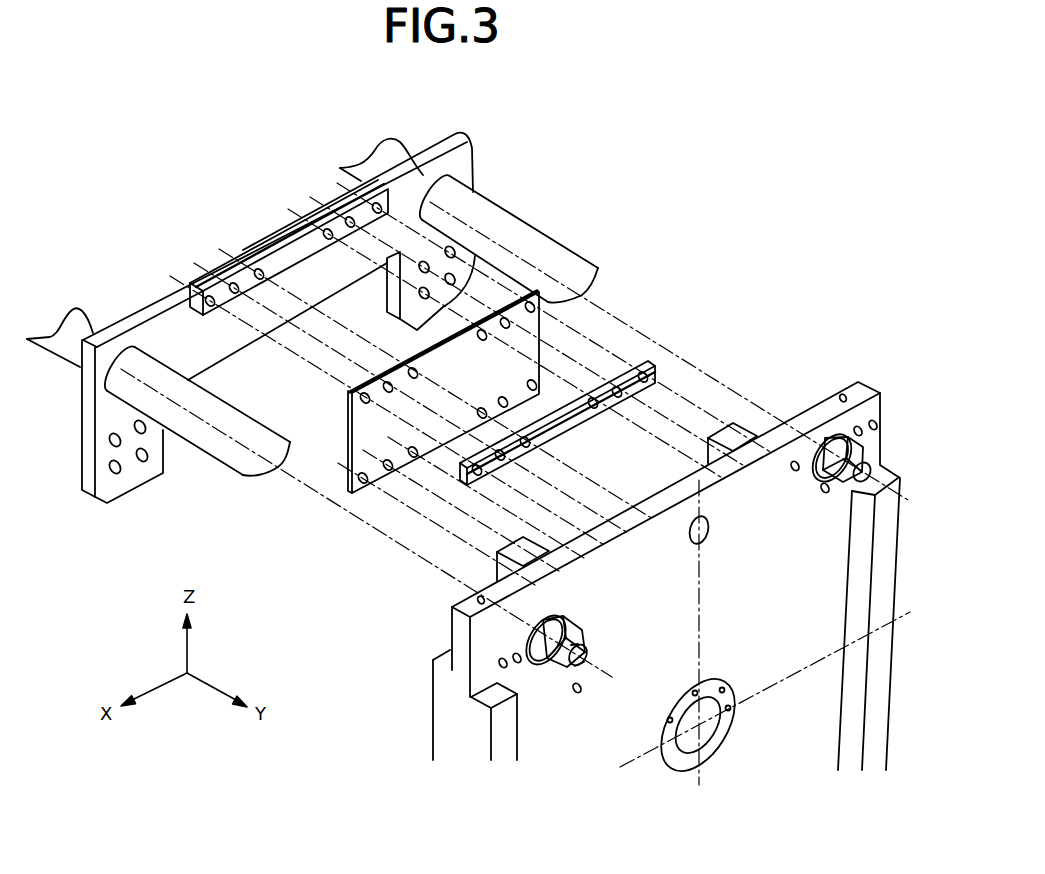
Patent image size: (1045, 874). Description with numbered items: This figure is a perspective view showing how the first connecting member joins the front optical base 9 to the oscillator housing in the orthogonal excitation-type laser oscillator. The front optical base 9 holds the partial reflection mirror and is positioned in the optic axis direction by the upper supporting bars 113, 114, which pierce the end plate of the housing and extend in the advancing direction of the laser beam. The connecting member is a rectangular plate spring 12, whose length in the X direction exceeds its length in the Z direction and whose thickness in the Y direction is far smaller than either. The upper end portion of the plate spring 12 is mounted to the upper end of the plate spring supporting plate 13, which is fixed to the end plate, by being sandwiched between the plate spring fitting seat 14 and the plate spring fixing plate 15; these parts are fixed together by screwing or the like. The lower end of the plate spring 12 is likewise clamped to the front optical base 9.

The front optical base 9 is at (867, 382).
The plate spring 12 is at (544, 330).
The plate spring supporting plate 13 is at (463, 131).
The plate spring fitting seat 14 is at (271, 243).
The plate spring fixing plate 15 is at (681, 360).
The upper supporting bar 113 is at (213, 460).
The upper supporting bar 114 is at (509, 208).